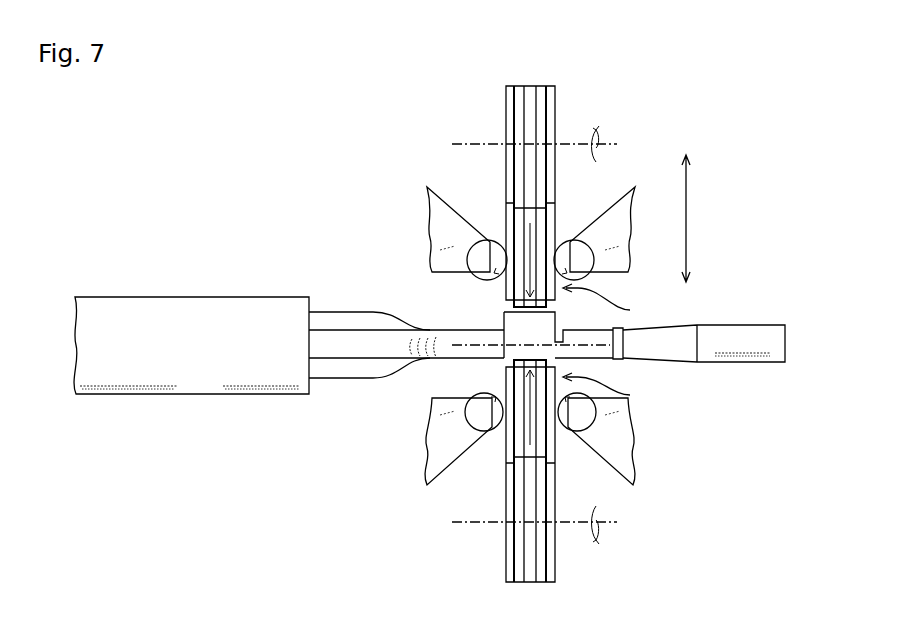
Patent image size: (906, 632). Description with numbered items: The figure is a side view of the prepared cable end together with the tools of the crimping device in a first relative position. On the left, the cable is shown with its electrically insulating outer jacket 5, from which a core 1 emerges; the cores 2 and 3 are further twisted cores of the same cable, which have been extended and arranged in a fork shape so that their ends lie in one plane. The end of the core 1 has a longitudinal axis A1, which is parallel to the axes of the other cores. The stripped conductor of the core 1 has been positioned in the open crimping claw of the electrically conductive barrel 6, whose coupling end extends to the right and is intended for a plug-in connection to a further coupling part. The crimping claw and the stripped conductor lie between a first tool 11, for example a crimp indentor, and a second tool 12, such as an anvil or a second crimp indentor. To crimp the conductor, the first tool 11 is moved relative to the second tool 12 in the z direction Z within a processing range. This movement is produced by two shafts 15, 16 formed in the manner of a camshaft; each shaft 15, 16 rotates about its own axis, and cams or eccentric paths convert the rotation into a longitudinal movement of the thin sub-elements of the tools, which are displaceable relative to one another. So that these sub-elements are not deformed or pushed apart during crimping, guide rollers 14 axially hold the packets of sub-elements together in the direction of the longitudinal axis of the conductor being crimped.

The core 1 is at (323, 350).
The core 2 is at (328, 317).
The core 3 is at (369, 368).
The outer jacket 5 is at (108, 307).
The barrel 6 is at (751, 340).
The first tool 11 is at (609, 302).
The second tool 12 is at (609, 390).
The guide rollers 14 is at (488, 238).
The shaft 15 is at (518, 113).
The shaft 16 is at (518, 558).
The longitudinal axis A1 is at (456, 343).
The z direction Z is at (695, 218).